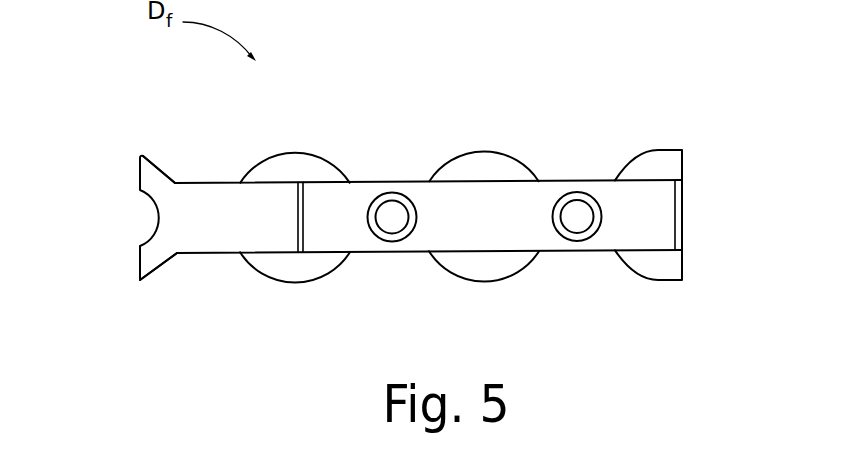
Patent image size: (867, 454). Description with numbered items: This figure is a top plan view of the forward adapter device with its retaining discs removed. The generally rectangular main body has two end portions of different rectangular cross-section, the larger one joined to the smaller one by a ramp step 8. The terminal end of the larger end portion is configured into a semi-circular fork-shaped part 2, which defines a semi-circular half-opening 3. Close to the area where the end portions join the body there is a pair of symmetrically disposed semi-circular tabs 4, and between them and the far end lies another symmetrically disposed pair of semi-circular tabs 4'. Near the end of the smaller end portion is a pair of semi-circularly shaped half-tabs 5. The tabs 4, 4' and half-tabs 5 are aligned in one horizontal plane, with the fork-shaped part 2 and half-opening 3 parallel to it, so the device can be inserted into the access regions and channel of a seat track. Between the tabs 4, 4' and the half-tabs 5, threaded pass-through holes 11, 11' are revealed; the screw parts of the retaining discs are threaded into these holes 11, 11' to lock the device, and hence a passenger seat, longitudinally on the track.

The fork-shaped part 2 is at (158, 268).
The half-opening 3 is at (128, 220).
The semi-circular tabs 4 is at (285, 215).
The semi-circular tabs 4' is at (484, 215).
The half-tabs 5 is at (662, 153).
The ramp step 8 is at (301, 228).
The threaded pass-through hole 11 is at (392, 171).
The threaded pass-through hole 11' is at (577, 175).